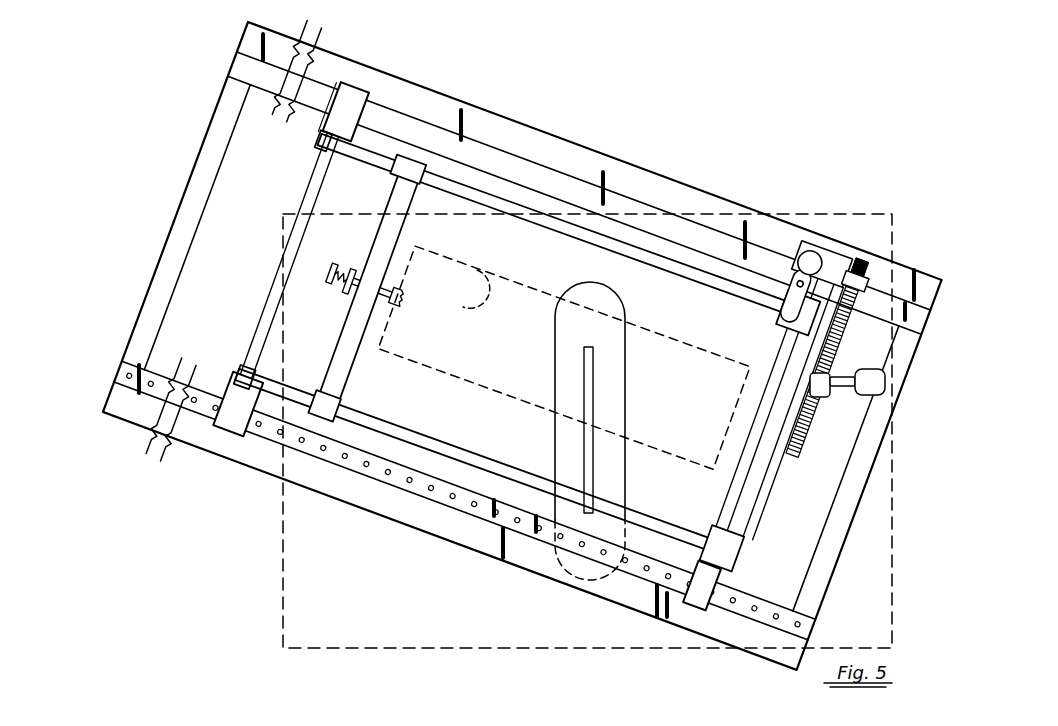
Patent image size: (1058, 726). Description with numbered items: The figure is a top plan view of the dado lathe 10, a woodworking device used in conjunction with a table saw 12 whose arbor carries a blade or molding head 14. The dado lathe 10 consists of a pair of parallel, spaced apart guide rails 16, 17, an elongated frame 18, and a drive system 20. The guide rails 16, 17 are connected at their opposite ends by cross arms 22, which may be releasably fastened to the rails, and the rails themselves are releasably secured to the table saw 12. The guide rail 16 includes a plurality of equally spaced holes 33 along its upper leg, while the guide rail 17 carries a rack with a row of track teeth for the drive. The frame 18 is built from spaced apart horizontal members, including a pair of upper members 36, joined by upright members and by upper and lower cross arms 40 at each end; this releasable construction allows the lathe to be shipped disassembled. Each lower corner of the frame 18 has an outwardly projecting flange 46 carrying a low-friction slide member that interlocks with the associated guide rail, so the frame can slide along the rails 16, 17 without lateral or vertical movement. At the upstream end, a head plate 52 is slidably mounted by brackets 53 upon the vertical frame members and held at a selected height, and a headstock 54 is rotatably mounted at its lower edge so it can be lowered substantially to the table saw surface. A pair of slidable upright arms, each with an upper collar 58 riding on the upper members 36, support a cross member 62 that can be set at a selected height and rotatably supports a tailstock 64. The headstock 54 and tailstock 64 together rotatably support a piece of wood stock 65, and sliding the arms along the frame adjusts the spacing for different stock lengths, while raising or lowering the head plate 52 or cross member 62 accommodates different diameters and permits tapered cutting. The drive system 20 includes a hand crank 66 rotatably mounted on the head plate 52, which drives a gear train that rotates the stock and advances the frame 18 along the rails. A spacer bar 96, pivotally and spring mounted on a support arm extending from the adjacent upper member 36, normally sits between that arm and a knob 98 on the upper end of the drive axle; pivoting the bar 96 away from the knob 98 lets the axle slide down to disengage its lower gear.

The dado lathe 10 is at (505, 104).
The table saw 12 is at (498, 647).
The molding head 14 is at (588, 473).
The guide rail 16 is at (522, 520).
The guide rail 17 is at (788, 371).
The frame 18 is at (524, 333).
The drive system 20 is at (805, 447).
The cross arm 22 is at (208, 162).
The holes 33 is at (482, 506).
The upper member 36 is at (760, 302).
The cross arm 40 is at (315, 187).
The flange 46 is at (357, 104).
The head plate 52 is at (773, 481).
The bracket 53 is at (800, 345).
The headstock 54 is at (727, 485).
The upper collar 58 is at (412, 172).
The cross member 62 is at (342, 366).
The tailstock 64 is at (396, 306).
The wood stock 65 is at (468, 306).
The hand crank 66 is at (815, 400).
The spacer bar 96 is at (783, 277).
The knob 98 is at (812, 256).